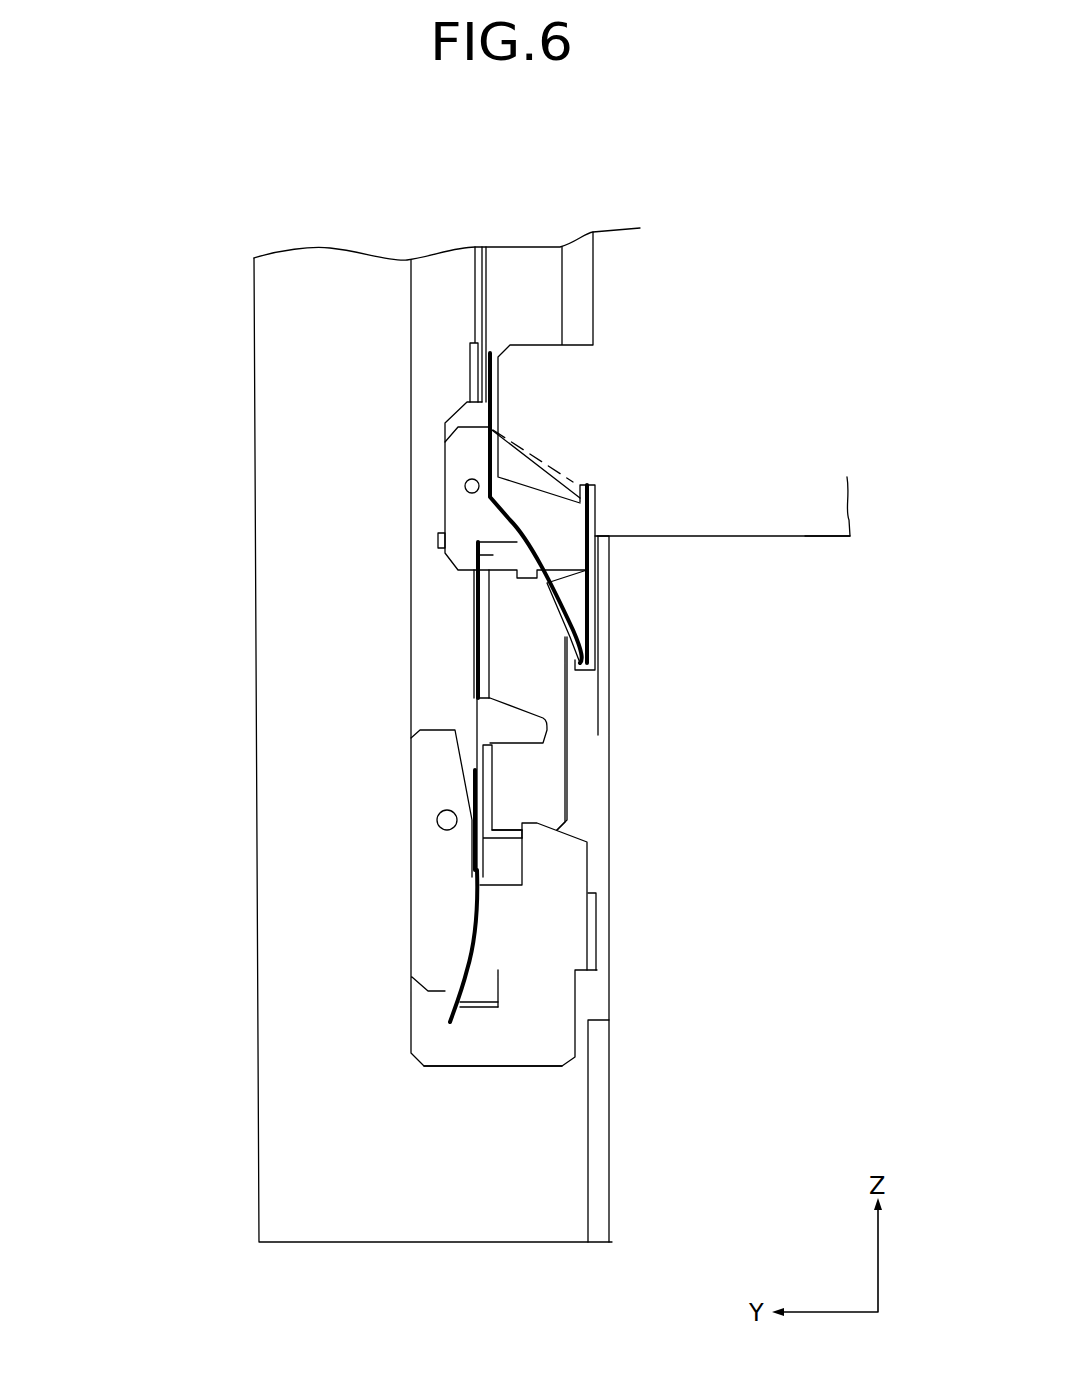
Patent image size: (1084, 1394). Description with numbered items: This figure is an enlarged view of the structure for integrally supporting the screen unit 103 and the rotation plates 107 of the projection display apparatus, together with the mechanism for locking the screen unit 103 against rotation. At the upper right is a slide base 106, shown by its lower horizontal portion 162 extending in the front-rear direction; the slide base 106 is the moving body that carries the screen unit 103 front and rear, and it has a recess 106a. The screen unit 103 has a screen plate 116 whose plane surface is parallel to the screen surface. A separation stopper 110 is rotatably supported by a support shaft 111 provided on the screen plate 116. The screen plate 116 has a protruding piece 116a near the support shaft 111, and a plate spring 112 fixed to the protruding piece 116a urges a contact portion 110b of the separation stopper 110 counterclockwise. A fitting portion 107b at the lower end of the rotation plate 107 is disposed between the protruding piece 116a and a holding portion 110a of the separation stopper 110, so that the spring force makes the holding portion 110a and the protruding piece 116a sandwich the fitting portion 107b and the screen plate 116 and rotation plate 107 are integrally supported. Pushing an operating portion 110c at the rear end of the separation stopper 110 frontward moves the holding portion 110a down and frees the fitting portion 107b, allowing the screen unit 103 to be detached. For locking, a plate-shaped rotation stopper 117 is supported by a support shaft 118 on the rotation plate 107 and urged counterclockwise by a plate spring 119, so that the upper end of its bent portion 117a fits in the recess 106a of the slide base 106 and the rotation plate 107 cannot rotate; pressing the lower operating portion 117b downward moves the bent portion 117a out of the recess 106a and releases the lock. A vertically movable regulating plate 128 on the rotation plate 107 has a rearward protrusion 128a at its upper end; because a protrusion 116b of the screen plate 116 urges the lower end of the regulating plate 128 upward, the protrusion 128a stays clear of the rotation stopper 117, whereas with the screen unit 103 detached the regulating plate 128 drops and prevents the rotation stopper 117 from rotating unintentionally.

The screen unit 103 is at (306, 1064).
The slide base 106 is at (757, 538).
The recess 106a is at (557, 472).
The rotation plate 107 is at (542, 310).
The fitting portion 107b is at (507, 827).
The separation stopper 110 is at (438, 897).
The holding portion 110a is at (525, 852).
The contact portion 110b is at (480, 1012).
The operating portion 110c is at (597, 935).
The support shaft 111 is at (437, 821).
The plate spring 112 is at (470, 973).
The screen plate 116 is at (455, 1050).
The protruding piece 116a is at (483, 863).
The protrusion 116b is at (508, 723).
The rotation stopper 117 is at (467, 519).
The bent portion 117a is at (597, 510).
The operating portion 117b is at (593, 615).
The support shaft 118 is at (465, 486).
The plate spring 119 is at (522, 521).
The regulating plate 128 is at (476, 643).
The protrusion 128a is at (476, 556).
The lower horizontal portion 162 is at (823, 538).